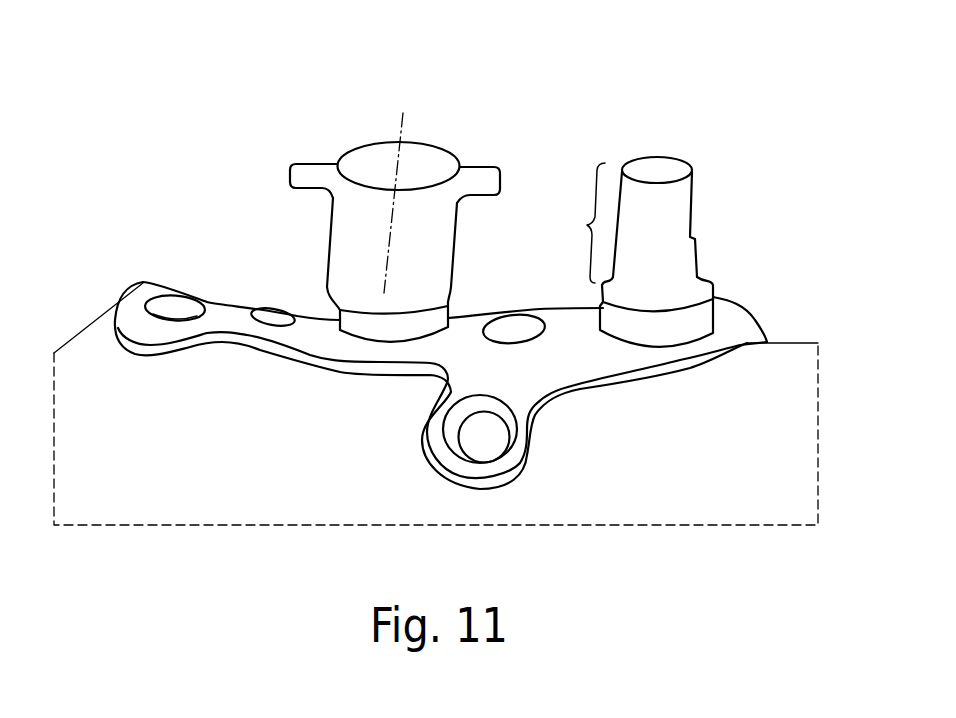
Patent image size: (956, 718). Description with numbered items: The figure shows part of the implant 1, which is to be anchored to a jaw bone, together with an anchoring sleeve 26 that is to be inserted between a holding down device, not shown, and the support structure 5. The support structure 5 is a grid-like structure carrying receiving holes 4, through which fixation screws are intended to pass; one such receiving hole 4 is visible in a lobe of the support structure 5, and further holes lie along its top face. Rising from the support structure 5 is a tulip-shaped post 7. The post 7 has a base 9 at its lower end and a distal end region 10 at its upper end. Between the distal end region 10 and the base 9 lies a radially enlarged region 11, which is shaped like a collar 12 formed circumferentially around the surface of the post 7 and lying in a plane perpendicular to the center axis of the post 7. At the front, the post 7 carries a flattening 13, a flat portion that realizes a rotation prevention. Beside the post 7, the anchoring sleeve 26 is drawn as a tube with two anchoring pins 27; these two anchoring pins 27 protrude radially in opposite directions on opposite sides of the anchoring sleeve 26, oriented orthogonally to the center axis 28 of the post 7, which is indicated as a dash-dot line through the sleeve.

The implant 1 is at (692, 393).
The receiving holes 4 is at (487, 445).
The support structure 5 is at (530, 382).
The post 7 is at (660, 210).
The base 9 is at (703, 333).
The distal end region 10 is at (587, 225).
The radially enlarged region 11 is at (690, 303).
The collar 12 is at (656, 323).
The flattening 13 is at (692, 240).
The anchoring sleeve 26 is at (395, 238).
The anchoring pins 27 is at (308, 178).
The center axis 28 is at (393, 232).